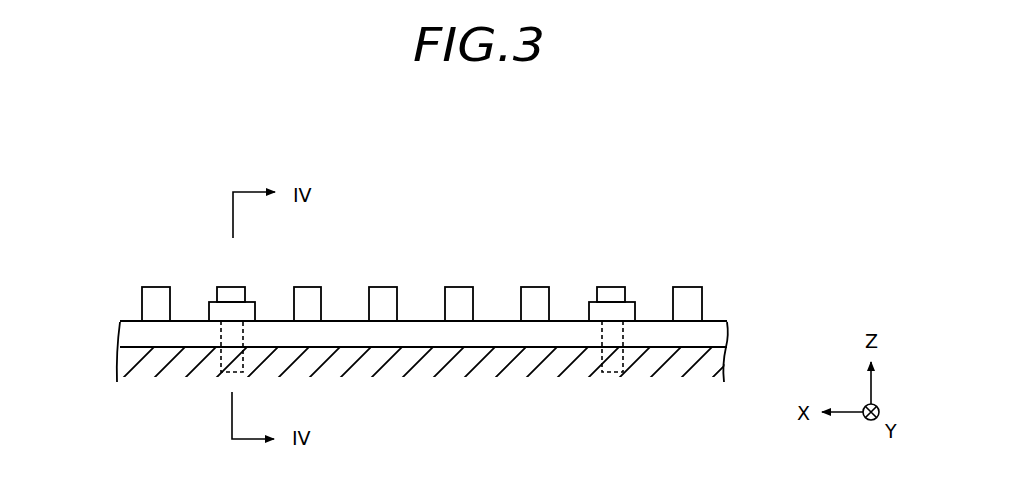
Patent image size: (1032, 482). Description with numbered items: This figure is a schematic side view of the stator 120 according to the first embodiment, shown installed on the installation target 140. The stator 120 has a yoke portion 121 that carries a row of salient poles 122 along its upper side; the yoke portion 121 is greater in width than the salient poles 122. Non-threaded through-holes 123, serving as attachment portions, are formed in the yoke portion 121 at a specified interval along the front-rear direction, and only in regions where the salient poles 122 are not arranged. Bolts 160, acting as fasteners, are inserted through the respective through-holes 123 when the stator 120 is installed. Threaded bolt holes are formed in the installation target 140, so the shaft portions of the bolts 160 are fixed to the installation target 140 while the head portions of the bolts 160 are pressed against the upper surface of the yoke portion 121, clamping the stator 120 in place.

The stator 120 is at (423, 283).
The yoke portion 121 is at (344, 332).
The salient poles 122 is at (307, 287).
The through-holes 123 is at (222, 333).
The bolts 160 is at (255, 302).
The installation target 140 is at (725, 369).